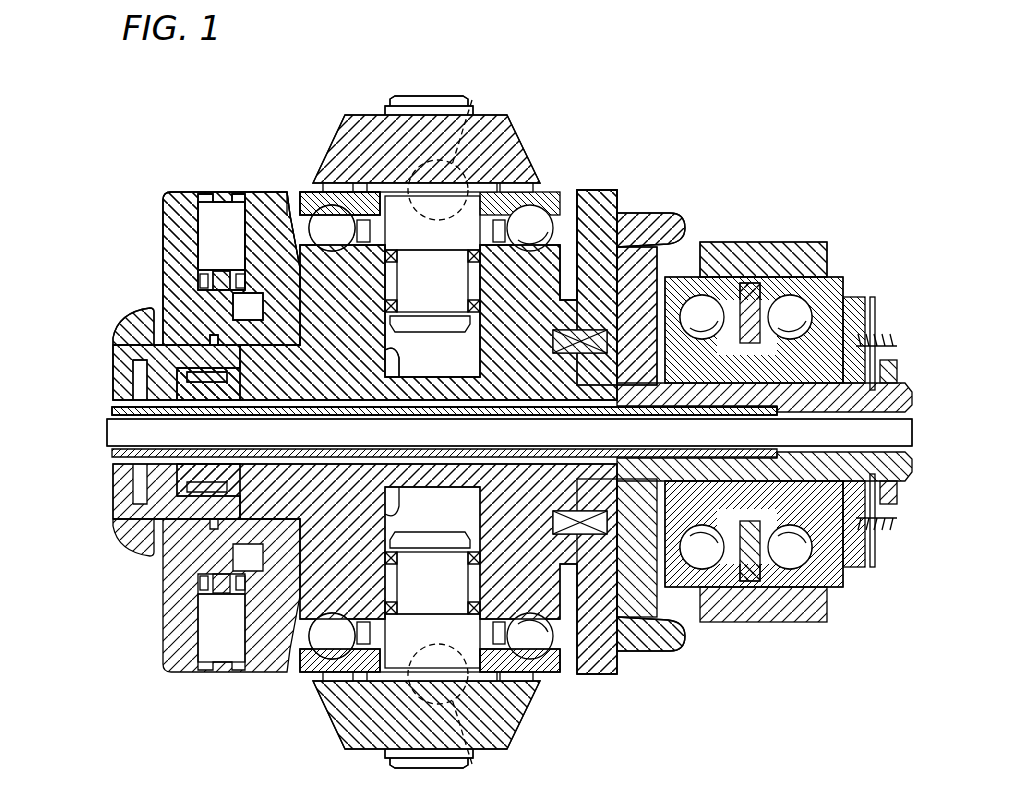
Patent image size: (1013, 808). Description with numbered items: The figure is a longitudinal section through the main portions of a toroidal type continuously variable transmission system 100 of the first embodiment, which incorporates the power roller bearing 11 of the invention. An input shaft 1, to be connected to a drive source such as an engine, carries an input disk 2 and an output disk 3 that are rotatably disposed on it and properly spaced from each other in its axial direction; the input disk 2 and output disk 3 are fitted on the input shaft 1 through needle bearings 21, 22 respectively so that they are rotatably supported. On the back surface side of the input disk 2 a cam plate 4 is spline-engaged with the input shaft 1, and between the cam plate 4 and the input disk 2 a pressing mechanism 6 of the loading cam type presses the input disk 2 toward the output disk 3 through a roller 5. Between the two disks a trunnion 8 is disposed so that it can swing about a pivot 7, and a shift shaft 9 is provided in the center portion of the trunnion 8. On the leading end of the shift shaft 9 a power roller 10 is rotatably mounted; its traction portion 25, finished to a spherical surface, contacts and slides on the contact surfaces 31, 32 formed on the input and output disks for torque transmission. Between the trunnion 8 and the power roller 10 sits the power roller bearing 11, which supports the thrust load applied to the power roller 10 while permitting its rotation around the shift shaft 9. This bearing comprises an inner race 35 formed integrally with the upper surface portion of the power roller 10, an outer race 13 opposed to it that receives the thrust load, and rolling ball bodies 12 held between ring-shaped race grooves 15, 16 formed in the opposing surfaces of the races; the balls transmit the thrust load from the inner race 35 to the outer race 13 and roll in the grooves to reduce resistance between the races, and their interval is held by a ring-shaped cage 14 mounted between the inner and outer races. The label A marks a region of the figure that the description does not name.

The input shaft 1 is at (130, 500).
The input disk 2 is at (255, 192).
The output disk 3 is at (598, 192).
The cam plate 4 is at (182, 192).
The roller 5 is at (215, 222).
The pressing mechanism 6 is at (210, 166).
The pivot 7 is at (470, 108).
The trunnion 8 is at (505, 140).
The shift shaft 9 is at (478, 205).
The power roller 10 is at (565, 230).
The power roller bearing 11 is at (566, 180).
The rolling ball body 12 is at (333, 202).
The outer race 13 is at (347, 192).
The cage 14 is at (620, 200).
The race groove 15 is at (322, 212).
The race groove 16 is at (338, 215).
The needle bearing 21 is at (110, 424).
The needle bearing 22 is at (522, 377).
The traction portion 25 is at (640, 246).
The contact surface 31 is at (112, 417).
The contact surface 32 is at (480, 340).
The inner race 35 is at (555, 243).
The toroidal type continuously variable transmission system 100 is at (146, 662).
The air gap A is at (286, 183).